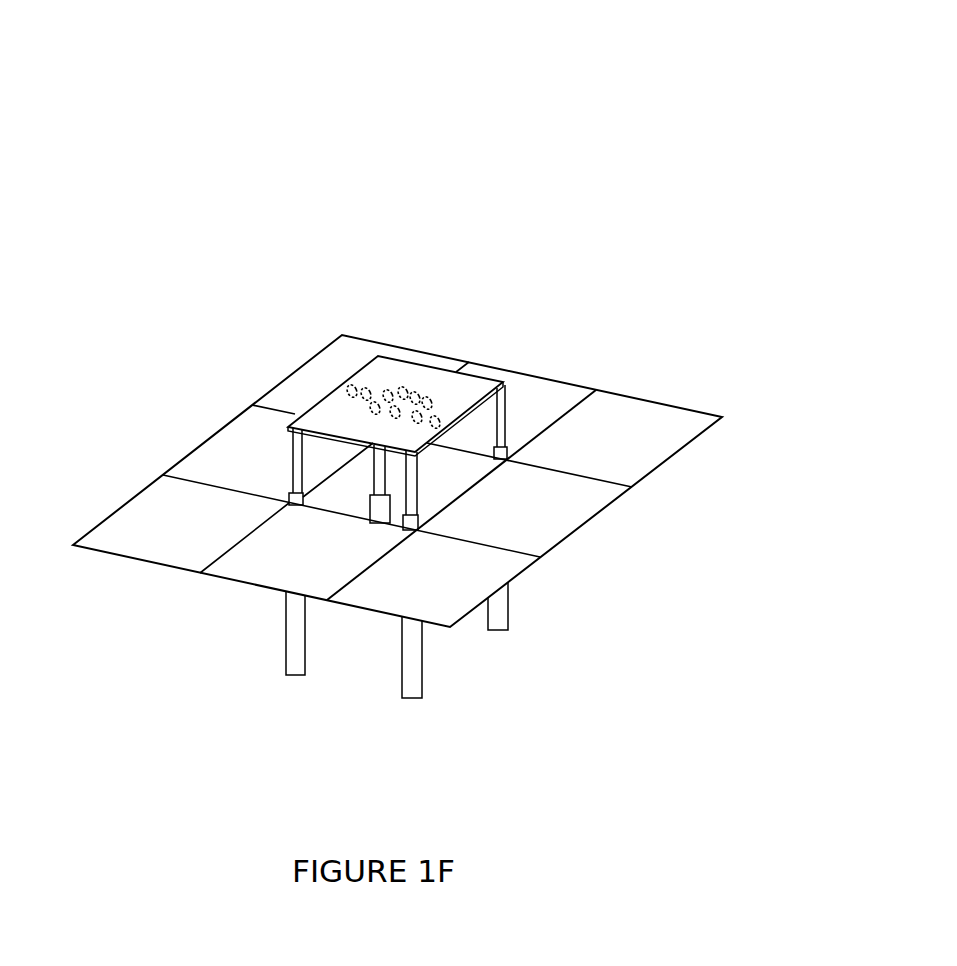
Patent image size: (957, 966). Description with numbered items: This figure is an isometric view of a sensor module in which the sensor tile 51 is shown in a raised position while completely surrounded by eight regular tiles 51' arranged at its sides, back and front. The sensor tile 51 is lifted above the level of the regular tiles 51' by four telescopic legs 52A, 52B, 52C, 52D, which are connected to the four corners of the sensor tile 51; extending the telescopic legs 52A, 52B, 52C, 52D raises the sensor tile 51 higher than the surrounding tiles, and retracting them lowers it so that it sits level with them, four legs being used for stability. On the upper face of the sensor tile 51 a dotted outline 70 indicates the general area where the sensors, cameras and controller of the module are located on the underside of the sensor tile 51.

The sensor tile 51 is at (395, 376).
The regular tiles 51' is at (397, 488).
The telescopic leg 52A is at (283, 443).
The telescopic leg 52B is at (418, 490).
The telescopic leg 52C is at (503, 415).
The telescopic leg 52D is at (362, 492).
The dotted outline 70 is at (413, 418).